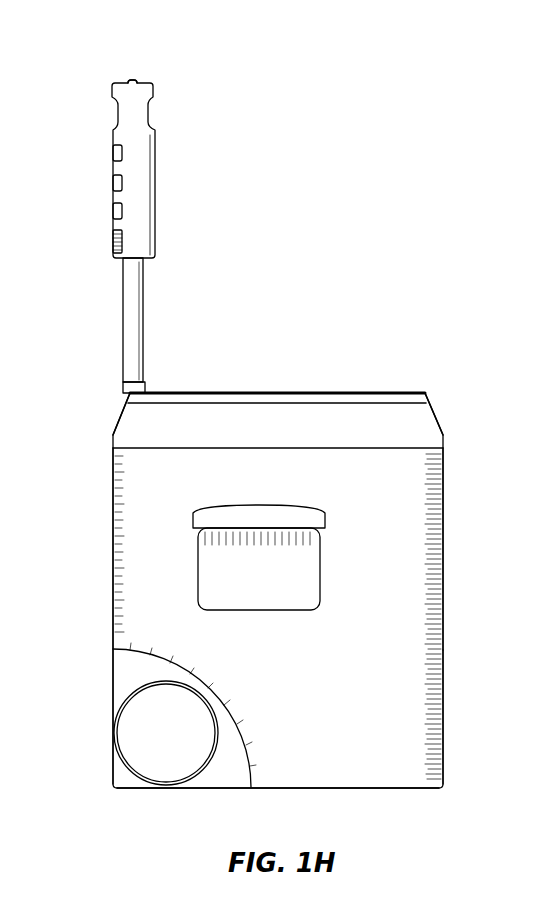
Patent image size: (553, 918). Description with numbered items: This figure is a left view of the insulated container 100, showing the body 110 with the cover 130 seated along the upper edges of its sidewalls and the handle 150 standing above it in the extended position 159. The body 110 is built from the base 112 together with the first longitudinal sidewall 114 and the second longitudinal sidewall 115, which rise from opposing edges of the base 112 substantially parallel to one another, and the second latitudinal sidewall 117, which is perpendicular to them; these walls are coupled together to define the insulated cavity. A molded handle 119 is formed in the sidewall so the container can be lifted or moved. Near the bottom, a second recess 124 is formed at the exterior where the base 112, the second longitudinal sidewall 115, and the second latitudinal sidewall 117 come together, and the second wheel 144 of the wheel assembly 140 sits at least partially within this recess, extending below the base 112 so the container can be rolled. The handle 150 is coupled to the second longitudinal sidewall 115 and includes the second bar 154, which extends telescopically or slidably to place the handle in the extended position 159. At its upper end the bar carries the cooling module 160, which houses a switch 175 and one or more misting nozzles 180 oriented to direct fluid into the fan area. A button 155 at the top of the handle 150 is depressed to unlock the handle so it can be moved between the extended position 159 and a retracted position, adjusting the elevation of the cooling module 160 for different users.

The insulated container 100 is at (449, 117).
The body 110 is at (461, 571).
The base 112 is at (345, 790).
The first longitudinal sidewall 114 is at (446, 513).
The second longitudinal sidewall 115 is at (112, 512).
The second latitudinal sidewall 117 is at (422, 672).
The molded handle 119 is at (322, 515).
The second recess 124 is at (128, 672).
The cover 130 is at (436, 416).
The wheel assembly 140 is at (133, 730).
The second wheel 144 is at (146, 770).
The handle 150 is at (95, 129).
The second bar 154 is at (123, 317).
The button 155 is at (132, 80).
The extended position 159 is at (182, 93).
The cooling module 160 is at (156, 188).
The switch 175 is at (112, 242).
The misting nozzles 180 is at (110, 182).